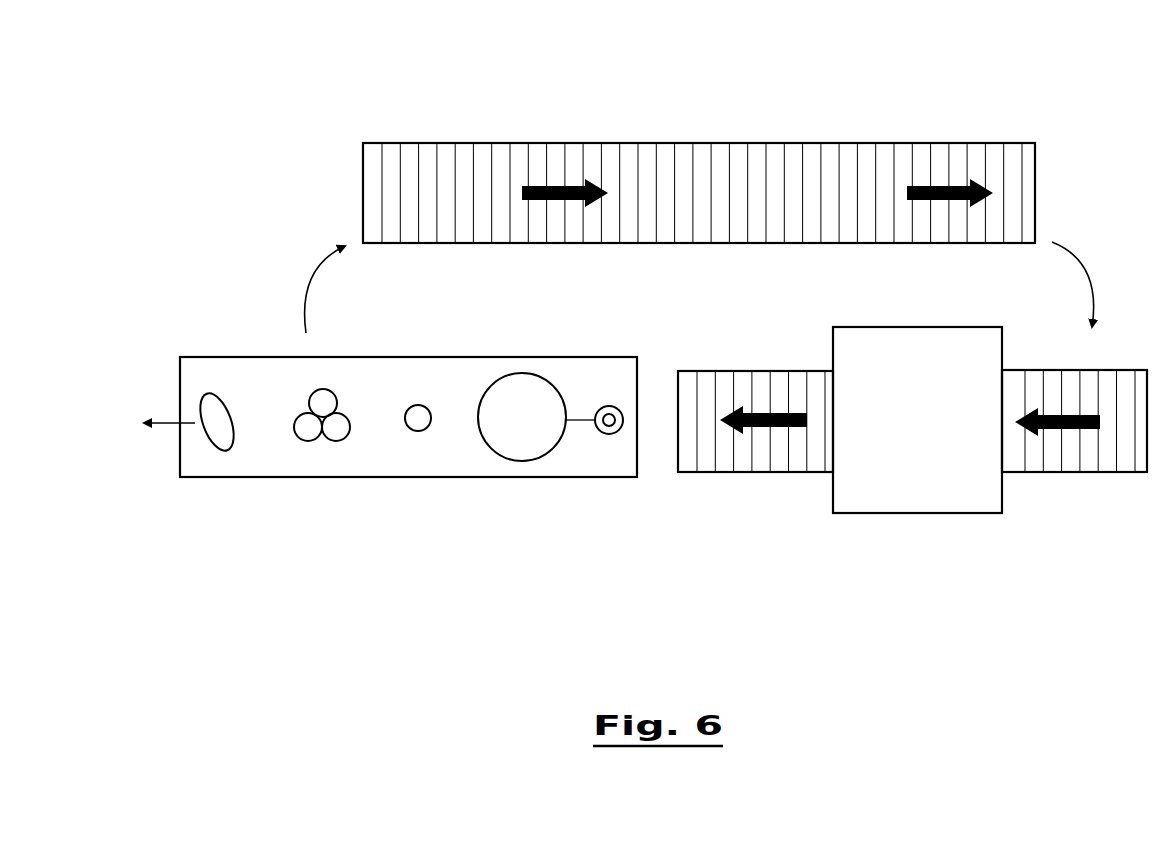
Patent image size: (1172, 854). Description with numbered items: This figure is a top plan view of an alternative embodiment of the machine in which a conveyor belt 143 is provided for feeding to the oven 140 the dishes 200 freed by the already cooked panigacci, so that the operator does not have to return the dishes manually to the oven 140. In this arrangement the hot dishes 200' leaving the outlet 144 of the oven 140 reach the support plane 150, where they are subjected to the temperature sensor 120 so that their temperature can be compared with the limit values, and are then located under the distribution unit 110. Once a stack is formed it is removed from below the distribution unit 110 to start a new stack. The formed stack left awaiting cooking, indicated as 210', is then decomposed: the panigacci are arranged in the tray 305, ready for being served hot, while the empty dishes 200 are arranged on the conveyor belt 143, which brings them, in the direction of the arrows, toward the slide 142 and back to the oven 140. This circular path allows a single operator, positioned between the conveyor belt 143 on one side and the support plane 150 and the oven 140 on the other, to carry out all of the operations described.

The conveyor belt 143 is at (765, 145).
The support plane 150 is at (575, 477).
The tray 305 is at (220, 450).
The dishes 200 is at (352, 472).
The formed stack 210' is at (437, 361).
The distribution unit 110 is at (522, 373).
The temperature sensor 120 is at (605, 408).
The hot dishes 200' is at (632, 494).
The oven 140 is at (902, 503).
The outlet 144 is at (764, 472).
The slide 142 is at (1090, 466).